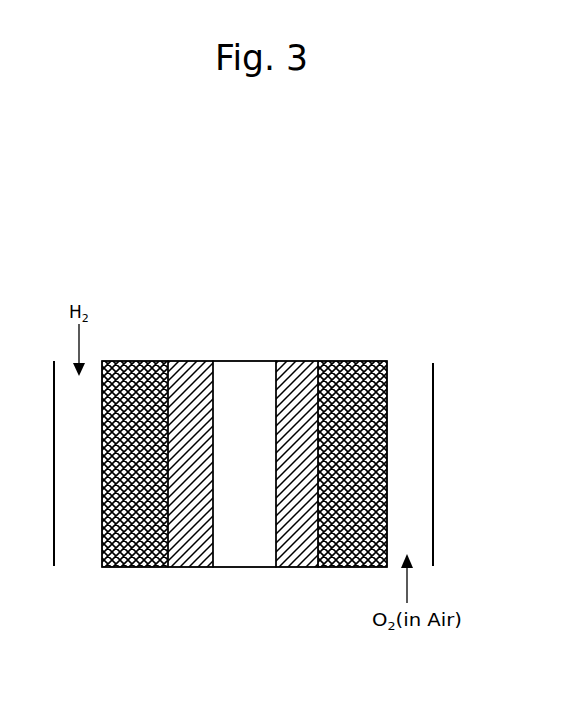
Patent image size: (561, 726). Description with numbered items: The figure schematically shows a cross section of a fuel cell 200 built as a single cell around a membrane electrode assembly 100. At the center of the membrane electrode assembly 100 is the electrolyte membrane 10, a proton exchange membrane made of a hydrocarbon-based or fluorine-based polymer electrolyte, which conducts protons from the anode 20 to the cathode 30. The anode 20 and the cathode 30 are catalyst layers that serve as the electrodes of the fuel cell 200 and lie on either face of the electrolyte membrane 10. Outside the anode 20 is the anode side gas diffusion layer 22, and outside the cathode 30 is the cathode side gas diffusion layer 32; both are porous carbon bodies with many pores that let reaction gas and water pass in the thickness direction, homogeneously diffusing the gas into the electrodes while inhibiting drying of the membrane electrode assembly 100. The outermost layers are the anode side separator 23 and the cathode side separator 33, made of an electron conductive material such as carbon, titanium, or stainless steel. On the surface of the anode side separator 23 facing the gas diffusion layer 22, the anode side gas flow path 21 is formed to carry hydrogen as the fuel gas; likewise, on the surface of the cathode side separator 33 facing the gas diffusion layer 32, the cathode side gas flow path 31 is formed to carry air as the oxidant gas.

The fuel cell 200 is at (386, 329).
The membrane electrode assembly 100 is at (318, 662).
The electrolyte membrane 10 is at (240, 568).
The anode (catalyst layer) 20 is at (186, 568).
The anode side gas flow path 21 is at (80, 568).
The anode side gas diffusion layer 22 is at (130, 568).
The anode side separator 23 is at (54, 462).
The cathode (catalyst layer) 30 is at (290, 568).
The cathode side gas flow path 31 is at (421, 564).
The cathode side gas diffusion layer 32 is at (345, 568).
The cathode side separator 33 is at (433, 467).